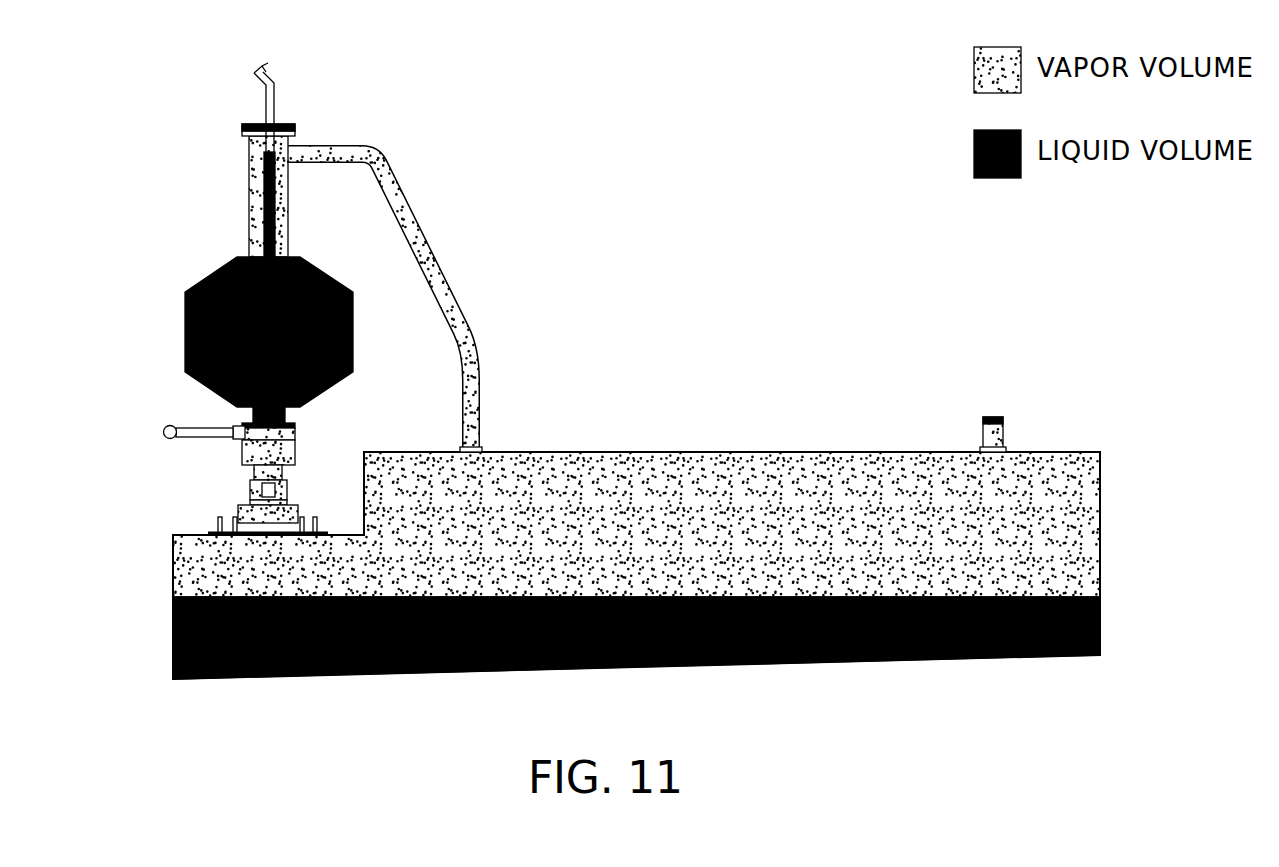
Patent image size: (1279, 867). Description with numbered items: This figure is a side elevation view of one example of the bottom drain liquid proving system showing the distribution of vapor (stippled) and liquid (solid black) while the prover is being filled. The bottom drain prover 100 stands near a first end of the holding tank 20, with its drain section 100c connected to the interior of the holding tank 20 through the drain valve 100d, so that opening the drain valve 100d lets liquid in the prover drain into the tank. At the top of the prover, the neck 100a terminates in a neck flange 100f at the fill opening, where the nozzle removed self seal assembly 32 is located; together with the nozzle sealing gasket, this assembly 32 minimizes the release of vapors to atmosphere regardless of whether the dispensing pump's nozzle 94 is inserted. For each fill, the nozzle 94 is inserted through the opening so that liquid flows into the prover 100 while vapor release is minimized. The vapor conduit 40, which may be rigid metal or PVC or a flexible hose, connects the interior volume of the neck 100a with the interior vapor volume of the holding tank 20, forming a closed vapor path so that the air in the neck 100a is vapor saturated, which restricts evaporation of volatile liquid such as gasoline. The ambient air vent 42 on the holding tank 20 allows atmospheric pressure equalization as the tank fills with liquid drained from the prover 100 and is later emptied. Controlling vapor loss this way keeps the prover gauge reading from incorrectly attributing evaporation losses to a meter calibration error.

The holding tank 20 is at (669, 442).
The vapor conduit 40 is at (435, 270).
The ambient air vent 42 is at (993, 408).
The bottom drain prover 100 is at (244, 298).
The neck 100a is at (287, 210).
The drain section 100c is at (285, 413).
The drain valve 100d is at (295, 428).
The neck flange 100f is at (293, 131).
The nozzle 94 is at (266, 100).
The nozzle removed self seal assembly 32 is at (240, 127).